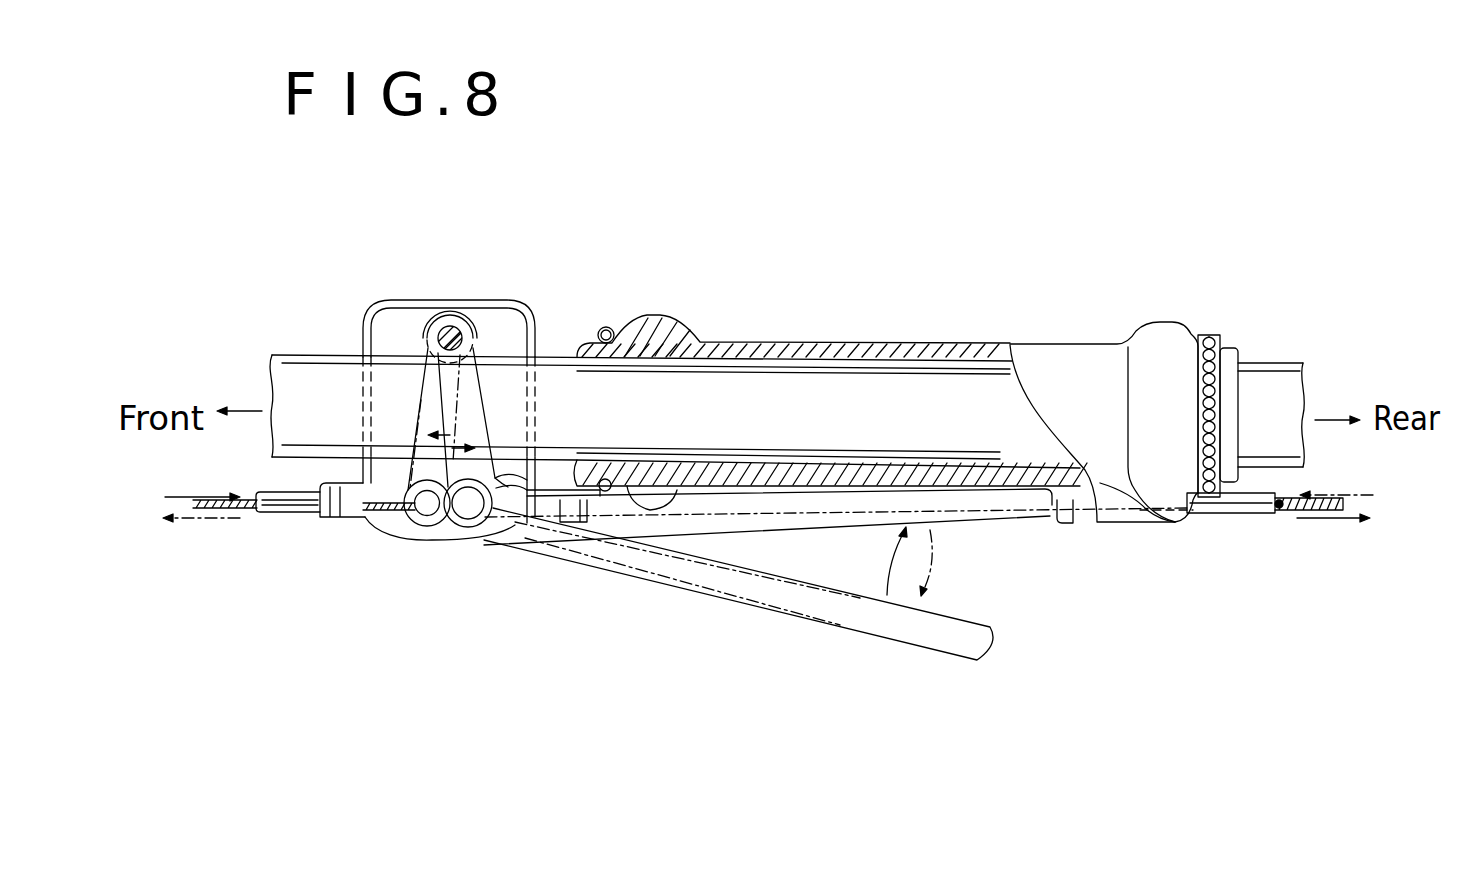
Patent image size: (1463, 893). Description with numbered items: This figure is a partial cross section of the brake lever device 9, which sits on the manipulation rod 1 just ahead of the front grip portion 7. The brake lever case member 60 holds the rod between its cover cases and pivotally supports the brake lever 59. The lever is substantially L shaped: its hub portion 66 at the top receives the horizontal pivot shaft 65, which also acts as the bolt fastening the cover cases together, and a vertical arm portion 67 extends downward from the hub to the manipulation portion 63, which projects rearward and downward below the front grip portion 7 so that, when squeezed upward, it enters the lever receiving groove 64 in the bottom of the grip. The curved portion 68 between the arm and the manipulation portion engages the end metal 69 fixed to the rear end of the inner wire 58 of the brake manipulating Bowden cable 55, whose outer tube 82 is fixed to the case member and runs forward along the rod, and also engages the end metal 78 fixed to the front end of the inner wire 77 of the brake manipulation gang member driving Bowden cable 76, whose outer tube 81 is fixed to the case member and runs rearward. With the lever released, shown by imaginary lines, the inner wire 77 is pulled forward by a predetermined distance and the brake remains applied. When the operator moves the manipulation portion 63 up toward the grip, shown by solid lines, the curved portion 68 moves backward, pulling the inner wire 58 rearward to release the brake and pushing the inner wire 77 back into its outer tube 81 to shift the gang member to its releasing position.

The manipulation rod 1 is at (547, 342).
The front grip portion 7 is at (853, 342).
The brake lever device 9 is at (526, 581).
The brake manipulating Bowden cable 55 is at (289, 554).
The inner wire 58 is at (232, 510).
The brake lever 59 is at (747, 527).
The brake lever case member 60 is at (496, 306).
The manipulation portion 63 is at (820, 527).
The lever receiving groove 64 is at (978, 490).
The pivot shaft 65 is at (451, 326).
The hub portion 66 is at (431, 331).
The vertical arm portion 67 is at (448, 405).
The curved portion 68 is at (500, 487).
The end metal 69 is at (430, 543).
The brake manipulation gang member driving Bowden cable 76 is at (1280, 556).
The inner wire 77 is at (1323, 533).
The end metal 78 is at (469, 510).
The outer tube 81 is at (1227, 512).
The outer tube 82 is at (342, 529).